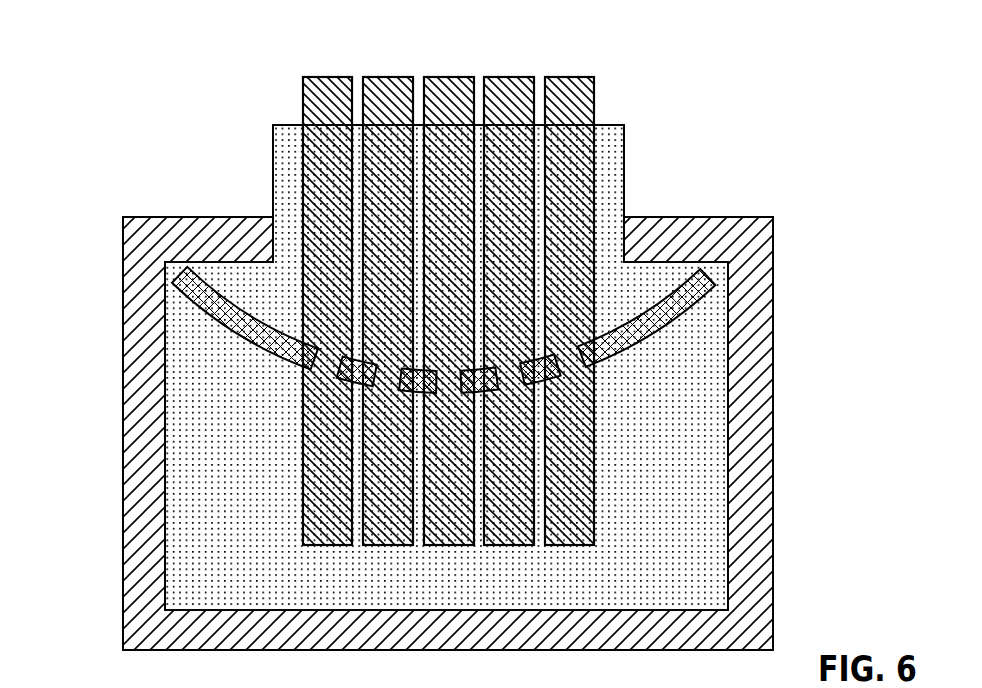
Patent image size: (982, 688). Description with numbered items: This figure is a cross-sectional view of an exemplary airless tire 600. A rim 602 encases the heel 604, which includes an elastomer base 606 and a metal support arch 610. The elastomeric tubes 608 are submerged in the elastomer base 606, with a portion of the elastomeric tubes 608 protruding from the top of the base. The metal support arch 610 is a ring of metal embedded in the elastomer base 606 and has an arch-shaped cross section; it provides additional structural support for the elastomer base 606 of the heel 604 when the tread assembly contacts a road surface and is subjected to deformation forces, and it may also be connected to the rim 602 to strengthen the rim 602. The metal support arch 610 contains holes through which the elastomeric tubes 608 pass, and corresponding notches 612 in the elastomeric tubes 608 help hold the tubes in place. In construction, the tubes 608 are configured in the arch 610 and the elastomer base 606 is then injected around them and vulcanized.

The airless tire 600 is at (420, 326).
The rim 602 is at (123, 338).
The heel 604 is at (640, 177).
The elastomer base 606 is at (273, 182).
The elastomeric tubes 608 is at (590, 65).
The metal support arch 610 is at (690, 324).
The notches 612 is at (602, 363).